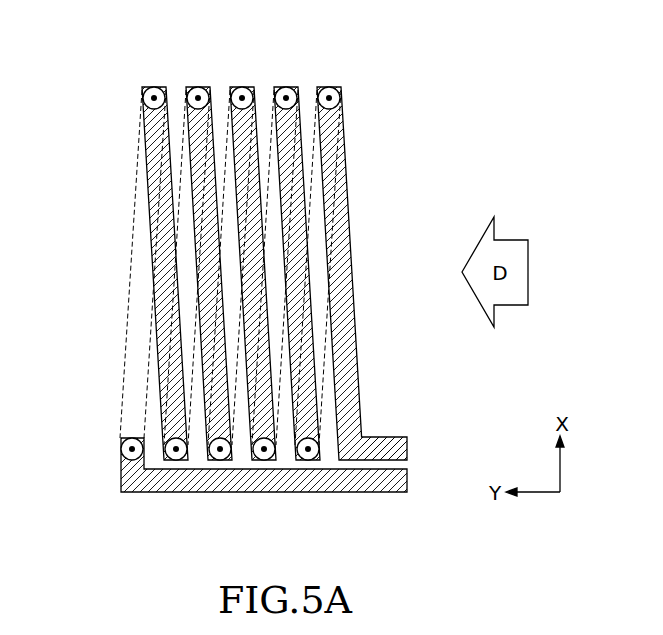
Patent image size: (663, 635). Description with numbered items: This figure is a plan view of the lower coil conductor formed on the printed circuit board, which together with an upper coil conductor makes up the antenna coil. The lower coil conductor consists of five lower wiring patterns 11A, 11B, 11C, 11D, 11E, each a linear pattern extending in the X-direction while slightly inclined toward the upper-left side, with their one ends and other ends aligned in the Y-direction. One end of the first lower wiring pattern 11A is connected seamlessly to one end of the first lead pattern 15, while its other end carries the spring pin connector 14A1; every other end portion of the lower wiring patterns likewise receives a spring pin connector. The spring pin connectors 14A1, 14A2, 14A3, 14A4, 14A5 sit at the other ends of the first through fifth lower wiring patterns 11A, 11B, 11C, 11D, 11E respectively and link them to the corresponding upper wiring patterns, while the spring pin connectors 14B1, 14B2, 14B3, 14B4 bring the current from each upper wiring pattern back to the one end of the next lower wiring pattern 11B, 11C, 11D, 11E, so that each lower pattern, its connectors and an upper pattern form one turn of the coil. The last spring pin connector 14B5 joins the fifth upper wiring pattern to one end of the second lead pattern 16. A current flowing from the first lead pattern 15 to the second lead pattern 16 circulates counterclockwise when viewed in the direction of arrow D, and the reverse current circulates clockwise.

The first lower wiring pattern 11A is at (350, 207).
The second lower wiring pattern 11B is at (302, 288).
The third lower wiring pattern 11C is at (248, 193).
The fourth lower wiring pattern 11D is at (205, 275).
The fifth lower wiring pattern 11E is at (160, 361).
The spring pin connector 14A1 is at (329, 87).
The spring pin connector 14A2 is at (286, 87).
The spring pin connector 14A3 is at (241, 87).
The spring pin connector 14A4 is at (198, 87).
The spring pin connector 14A5 is at (153, 87).
The spring pin connector 14B1 is at (308, 460).
The spring pin connector 14B2 is at (264, 460).
The spring pin connector 14B3 is at (220, 460).
The spring pin connector 14B4 is at (176, 460).
The spring pin connector 14B5 is at (121, 450).
The first lead pattern 15 is at (397, 438).
The second lead pattern 16 is at (397, 492).